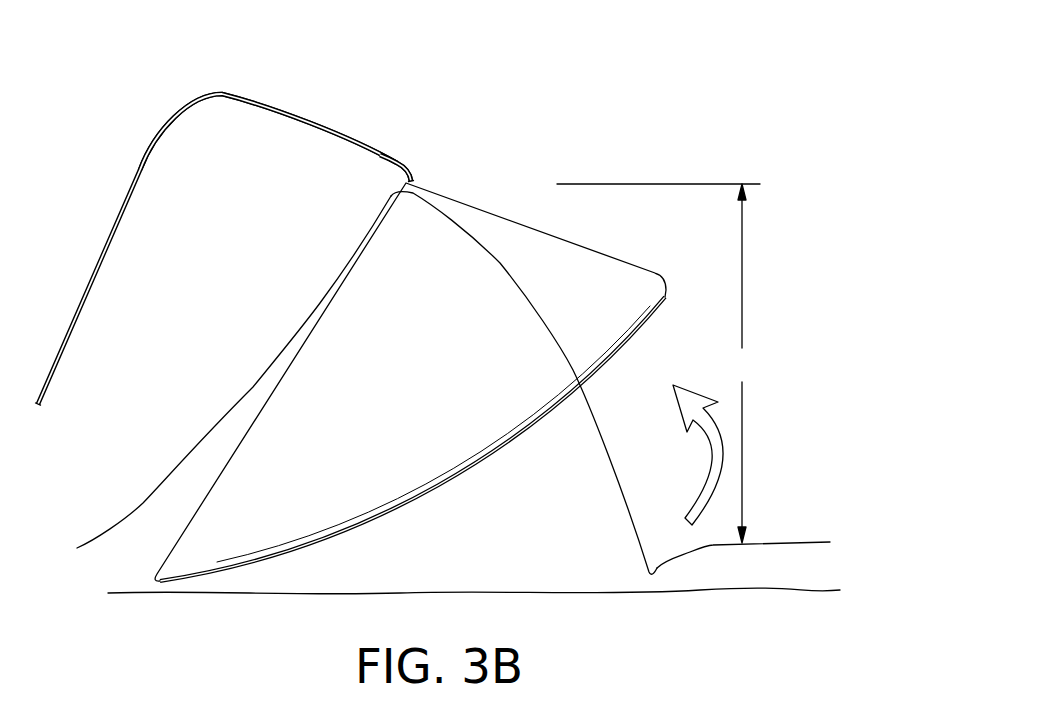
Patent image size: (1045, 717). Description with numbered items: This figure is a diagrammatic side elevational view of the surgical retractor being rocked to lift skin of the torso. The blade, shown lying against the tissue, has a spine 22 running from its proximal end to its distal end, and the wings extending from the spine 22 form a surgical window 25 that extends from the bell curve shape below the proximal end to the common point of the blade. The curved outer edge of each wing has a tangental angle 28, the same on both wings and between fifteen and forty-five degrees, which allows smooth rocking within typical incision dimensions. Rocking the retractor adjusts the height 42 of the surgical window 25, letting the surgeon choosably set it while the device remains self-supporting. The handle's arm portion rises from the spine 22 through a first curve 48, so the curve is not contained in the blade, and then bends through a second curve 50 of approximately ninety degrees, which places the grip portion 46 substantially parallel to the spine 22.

The spine 22 is at (250, 427).
The surgical window 25 is at (662, 454).
The tangental angle 28 is at (287, 558).
The height 42 is at (658, 363).
The grip portion 46 is at (86, 296).
The first curve 48 is at (414, 182).
The second curve 50 is at (200, 92).